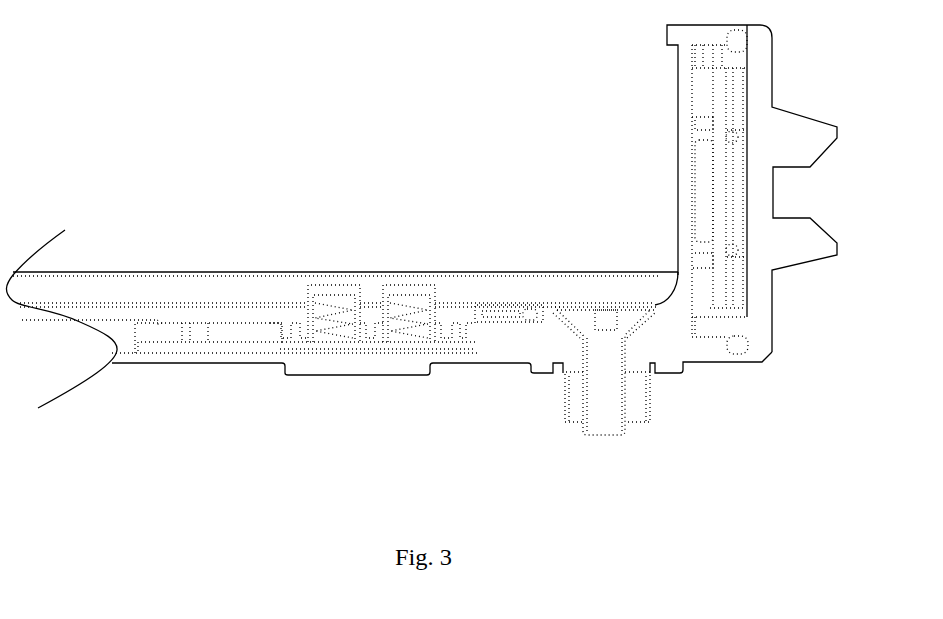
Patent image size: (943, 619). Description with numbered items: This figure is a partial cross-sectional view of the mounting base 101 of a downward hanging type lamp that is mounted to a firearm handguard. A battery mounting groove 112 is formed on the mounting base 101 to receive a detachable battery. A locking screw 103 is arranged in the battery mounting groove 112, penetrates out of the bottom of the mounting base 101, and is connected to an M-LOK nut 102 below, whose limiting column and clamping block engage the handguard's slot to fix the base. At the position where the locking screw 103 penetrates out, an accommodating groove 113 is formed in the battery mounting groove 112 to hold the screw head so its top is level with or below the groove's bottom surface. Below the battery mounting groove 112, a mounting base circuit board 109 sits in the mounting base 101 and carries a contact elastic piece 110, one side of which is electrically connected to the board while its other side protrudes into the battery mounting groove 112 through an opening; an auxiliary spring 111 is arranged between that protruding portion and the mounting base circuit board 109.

The mounting base 101 is at (340, 364).
The M-LOK nut 102 is at (568, 410).
The locking screw 103 is at (583, 323).
The mounting base circuit board 109 is at (228, 347).
The contact elastic piece 110 is at (355, 287).
The auxiliary spring 111 is at (311, 294).
The battery mounting groove 112 is at (677, 122).
The accommodating groove 113 is at (633, 311).